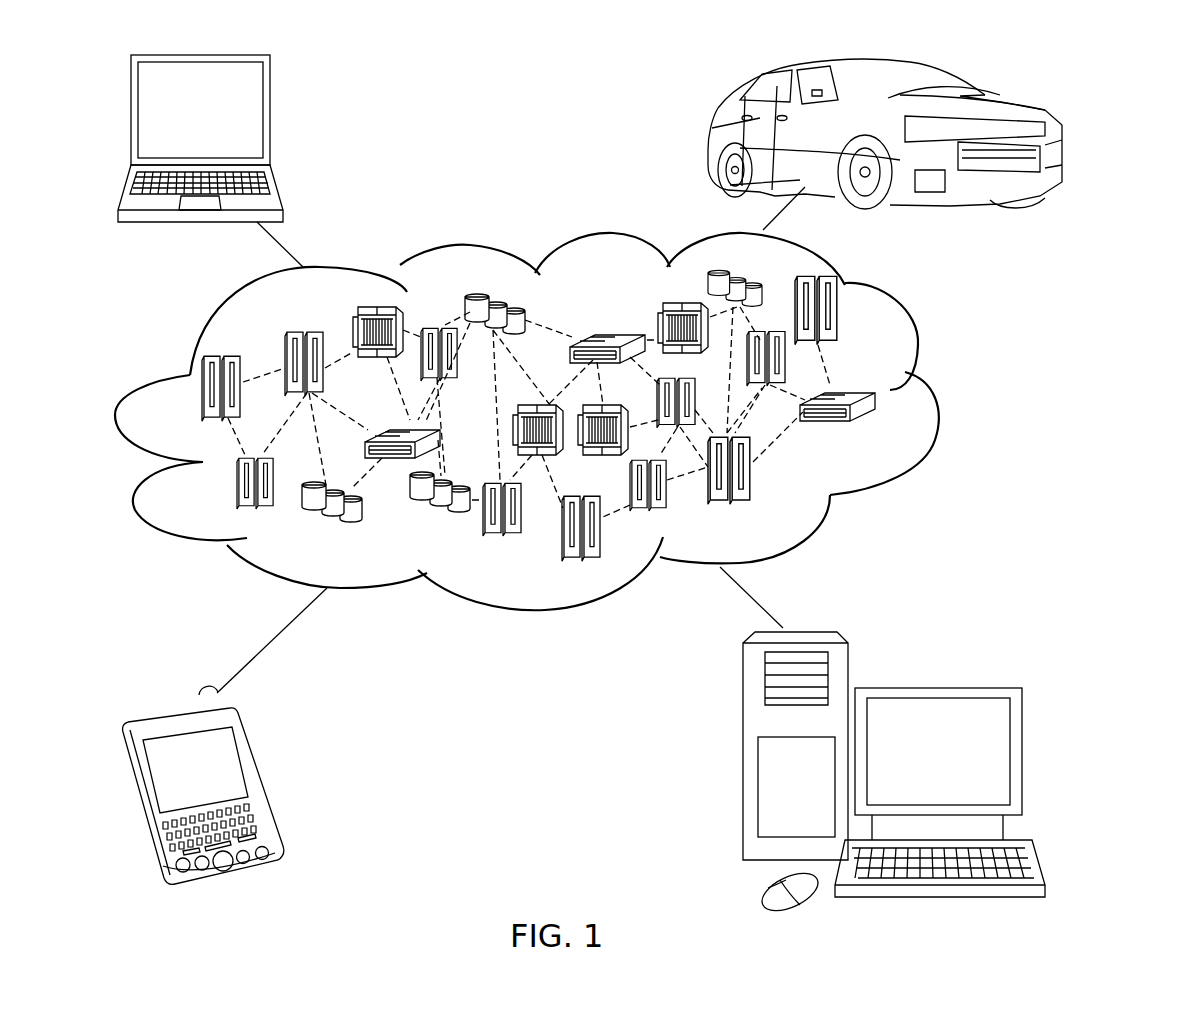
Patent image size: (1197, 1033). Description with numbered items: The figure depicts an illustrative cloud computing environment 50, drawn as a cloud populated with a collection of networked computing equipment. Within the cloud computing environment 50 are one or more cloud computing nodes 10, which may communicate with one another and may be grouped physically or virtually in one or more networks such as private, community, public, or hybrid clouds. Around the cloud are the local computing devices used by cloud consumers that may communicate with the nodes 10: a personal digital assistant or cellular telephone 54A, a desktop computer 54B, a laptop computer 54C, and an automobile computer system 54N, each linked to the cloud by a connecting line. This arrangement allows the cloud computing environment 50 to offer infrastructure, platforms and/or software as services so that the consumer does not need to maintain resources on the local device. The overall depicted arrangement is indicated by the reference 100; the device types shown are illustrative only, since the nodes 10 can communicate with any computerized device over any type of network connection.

The system 100 is at (1043, 75).
The cloud computing nodes 10 is at (875, 425).
The cloud computing environment 50 is at (935, 392).
The personal digital assistant or cellular telephone 54A is at (258, 779).
The desktop computer 54B is at (933, 688).
The laptop computer 54C is at (270, 120).
The automobile computer system 54N is at (716, 137).